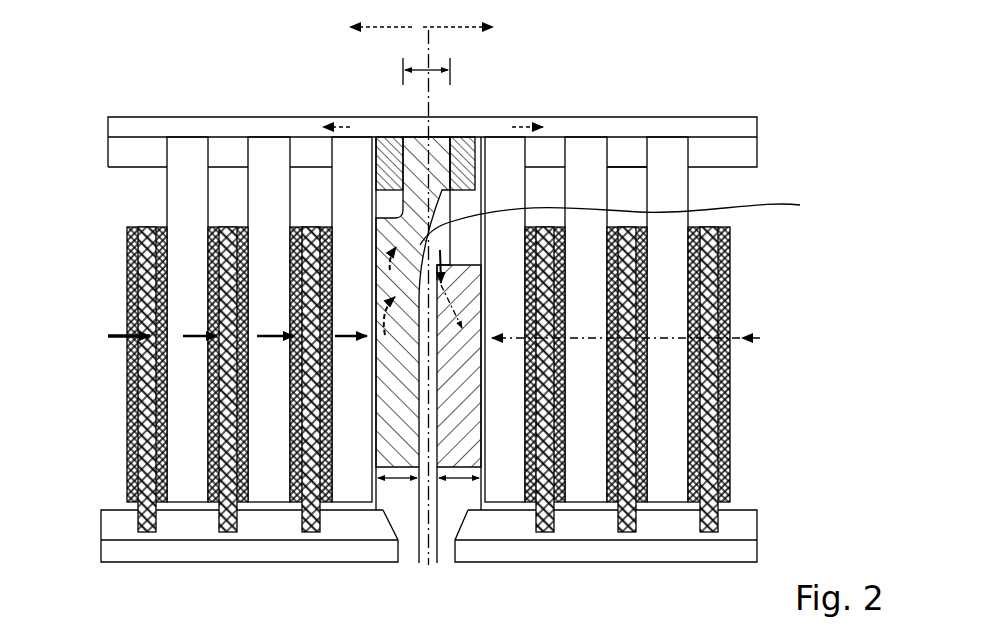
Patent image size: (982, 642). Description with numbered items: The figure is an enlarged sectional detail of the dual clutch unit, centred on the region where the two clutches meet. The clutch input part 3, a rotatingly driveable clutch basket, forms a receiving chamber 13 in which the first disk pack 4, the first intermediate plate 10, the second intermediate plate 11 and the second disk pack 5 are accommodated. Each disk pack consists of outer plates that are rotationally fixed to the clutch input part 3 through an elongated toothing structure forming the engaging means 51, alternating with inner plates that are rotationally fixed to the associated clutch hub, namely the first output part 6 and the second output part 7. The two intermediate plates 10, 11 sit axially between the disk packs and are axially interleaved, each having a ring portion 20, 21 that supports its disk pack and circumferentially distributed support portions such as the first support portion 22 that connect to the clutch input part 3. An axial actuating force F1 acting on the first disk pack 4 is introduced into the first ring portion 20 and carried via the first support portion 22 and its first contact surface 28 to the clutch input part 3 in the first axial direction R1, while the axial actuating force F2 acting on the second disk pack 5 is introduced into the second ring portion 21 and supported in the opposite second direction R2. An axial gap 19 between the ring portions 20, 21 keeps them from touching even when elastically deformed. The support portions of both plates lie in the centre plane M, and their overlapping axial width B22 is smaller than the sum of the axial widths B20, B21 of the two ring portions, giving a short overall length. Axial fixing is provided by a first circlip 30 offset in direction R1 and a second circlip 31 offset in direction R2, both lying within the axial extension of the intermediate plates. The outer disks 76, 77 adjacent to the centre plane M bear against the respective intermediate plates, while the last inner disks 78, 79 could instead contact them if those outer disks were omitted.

The clutch input part 3 is at (265, 118).
The first disk pack 4 is at (222, 148).
The second disk pack 5 is at (612, 142).
The first output part 6 is at (255, 550).
The second output part 7 is at (603, 553).
The first intermediate plate 10 is at (364, 262).
The second intermediate plate 11 is at (483, 300).
The receiving chamber 13 is at (548, 185).
The axial gap 19 is at (444, 568).
The first ring portion 20 is at (385, 385).
The second ring portion 21 is at (470, 395).
The first support portion 22 is at (422, 160).
The first contact surface 28 is at (457, 160).
The first circlip 30 is at (478, 137).
The second circlip 31 is at (384, 143).
The engaging means 51 is at (622, 158).
The outer disk 76 is at (340, 180).
The outer disk 77 is at (500, 490).
The inner disk 78 is at (335, 468).
The inner disk 79 is at (568, 467).
The centre plane M is at (425, 528).
The axial actuating force F1 is at (634, 221).
The axial actuating force F2 is at (352, 124).
The first axial direction R1 is at (458, 13).
The second direction R2 is at (381, 13).
The axial width of first ring portion B20 is at (397, 492).
The axial width of second ring portion B21 is at (459, 492).
The axial width of overlapping support portions B22 is at (426, 64).